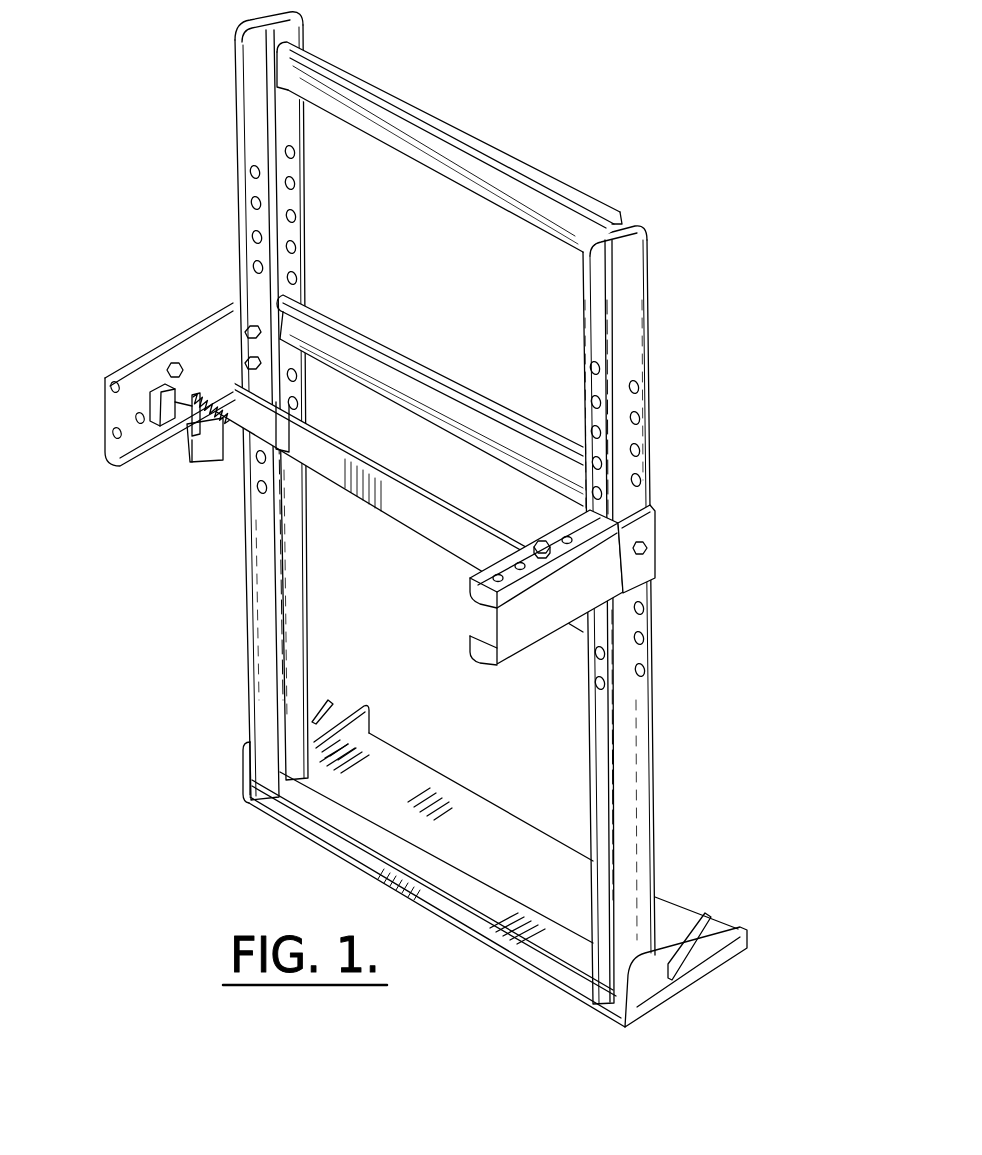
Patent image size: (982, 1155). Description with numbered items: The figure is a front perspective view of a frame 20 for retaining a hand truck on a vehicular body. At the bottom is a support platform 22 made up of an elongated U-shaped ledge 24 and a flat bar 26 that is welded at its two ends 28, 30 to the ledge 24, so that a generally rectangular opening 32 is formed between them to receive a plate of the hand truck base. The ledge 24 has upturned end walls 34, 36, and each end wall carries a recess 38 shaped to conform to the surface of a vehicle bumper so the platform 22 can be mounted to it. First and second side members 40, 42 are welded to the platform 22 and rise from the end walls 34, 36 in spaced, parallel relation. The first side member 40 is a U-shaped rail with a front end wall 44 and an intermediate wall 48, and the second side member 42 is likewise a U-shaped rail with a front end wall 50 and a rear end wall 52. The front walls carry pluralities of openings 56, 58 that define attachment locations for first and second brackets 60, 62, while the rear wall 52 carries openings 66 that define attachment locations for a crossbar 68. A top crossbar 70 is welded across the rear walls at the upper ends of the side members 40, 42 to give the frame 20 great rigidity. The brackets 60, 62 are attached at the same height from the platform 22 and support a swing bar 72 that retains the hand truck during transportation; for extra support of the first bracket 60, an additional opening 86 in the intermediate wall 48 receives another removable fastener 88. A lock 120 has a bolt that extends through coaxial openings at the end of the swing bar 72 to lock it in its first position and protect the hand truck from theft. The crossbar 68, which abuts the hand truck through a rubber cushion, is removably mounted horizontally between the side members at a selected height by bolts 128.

The frame 20 is at (451, 539).
The bottom support platform 22 is at (517, 855).
The U-shaped ledge 24 is at (383, 775).
The flat bar 26 is at (382, 836).
The end of flat bar 28 is at (610, 994).
The end of flat bar 30 is at (254, 798).
The rectangular opening 32 is at (351, 851).
The upturned end wall 34 is at (644, 992).
The upturned end wall 36 is at (240, 767).
The recess 38 is at (345, 700).
The first side member 40 is at (609, 615).
The second side member 42 is at (258, 406).
The front end wall 44 is at (596, 783).
The intermediate wall 48 is at (648, 768).
The front end wall 50 is at (258, 575).
The rear end wall 52 is at (293, 591).
The openings 56 is at (583, 476).
The openings 58 is at (223, 198).
The first bracket 60 is at (593, 604).
The second bracket 62 is at (208, 387).
The openings 66 is at (307, 155).
The crossbar 68 is at (363, 333).
The top crossbar 70 is at (466, 133).
The swing bar 72 is at (338, 438).
The additional opening 86 is at (657, 410).
The removable fastener 88 is at (650, 556).
The lock 120 is at (200, 456).
The bolts 128 is at (290, 303).